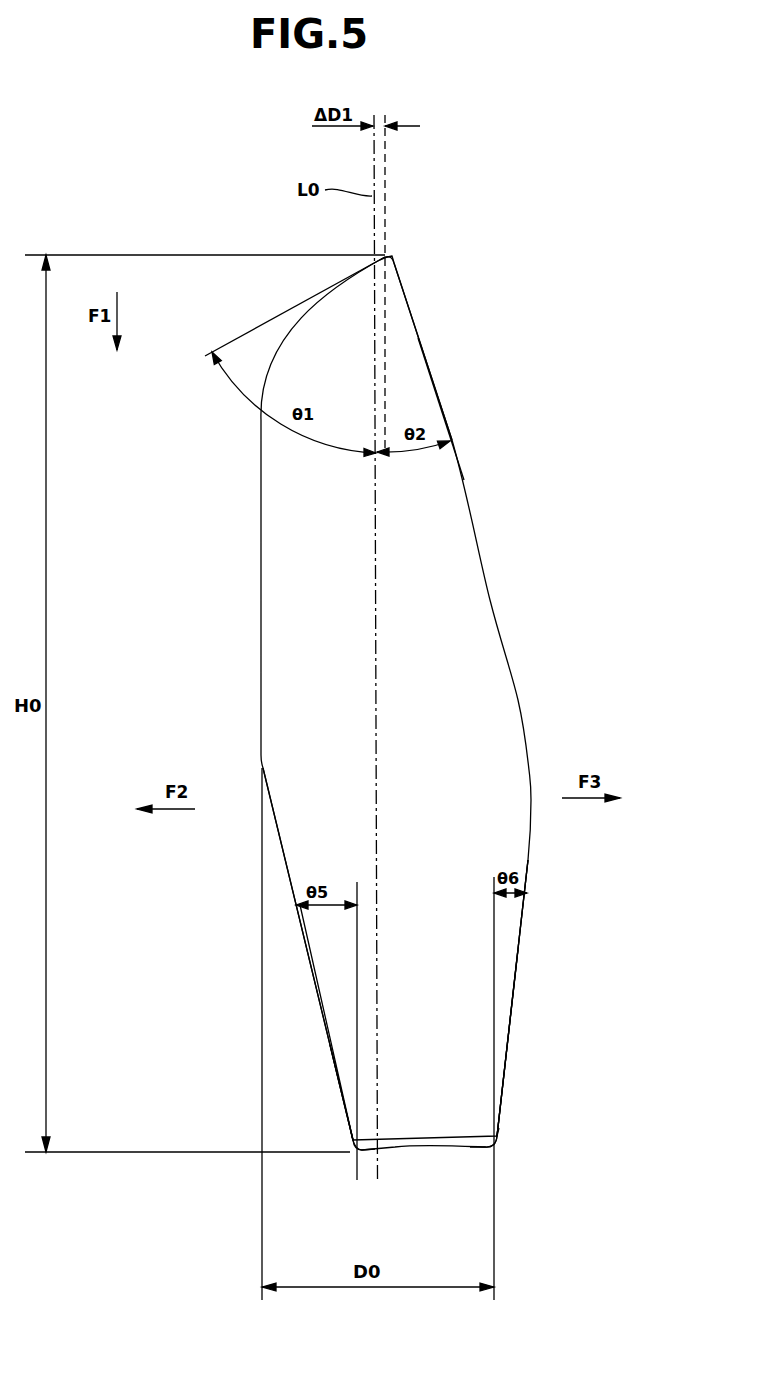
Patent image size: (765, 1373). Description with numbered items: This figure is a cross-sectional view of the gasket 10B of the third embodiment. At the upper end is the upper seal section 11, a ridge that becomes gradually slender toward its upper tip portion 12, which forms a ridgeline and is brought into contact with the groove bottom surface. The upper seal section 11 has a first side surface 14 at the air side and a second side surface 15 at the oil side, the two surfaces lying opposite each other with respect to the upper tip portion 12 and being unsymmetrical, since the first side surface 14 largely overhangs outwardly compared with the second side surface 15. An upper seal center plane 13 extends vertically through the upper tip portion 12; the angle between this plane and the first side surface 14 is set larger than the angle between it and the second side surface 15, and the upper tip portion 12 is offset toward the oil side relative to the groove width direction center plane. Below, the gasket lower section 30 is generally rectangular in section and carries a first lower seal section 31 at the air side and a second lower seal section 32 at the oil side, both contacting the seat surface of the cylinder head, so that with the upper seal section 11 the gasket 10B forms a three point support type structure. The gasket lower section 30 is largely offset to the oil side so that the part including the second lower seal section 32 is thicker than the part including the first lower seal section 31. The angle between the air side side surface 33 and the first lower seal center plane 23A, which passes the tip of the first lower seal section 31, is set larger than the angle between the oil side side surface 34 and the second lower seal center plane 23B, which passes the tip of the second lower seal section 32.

The gasket 10B is at (512, 598).
The upper seal section 11 is at (402, 333).
The upper tip portion 12 is at (386, 257).
The upper seal center plane 13 is at (388, 178).
The first side surface 14 is at (290, 318).
The second side surface 15 is at (442, 408).
The first lower seal center plane 23A is at (357, 1013).
The second lower seal center plane 23B is at (494, 1040).
The gasket lower section 30 is at (470, 955).
The first lower seal section 31 is at (358, 1151).
The second lower seal section 32 is at (496, 1149).
The side surface 33 is at (310, 966).
The side surface 34 is at (517, 1015).